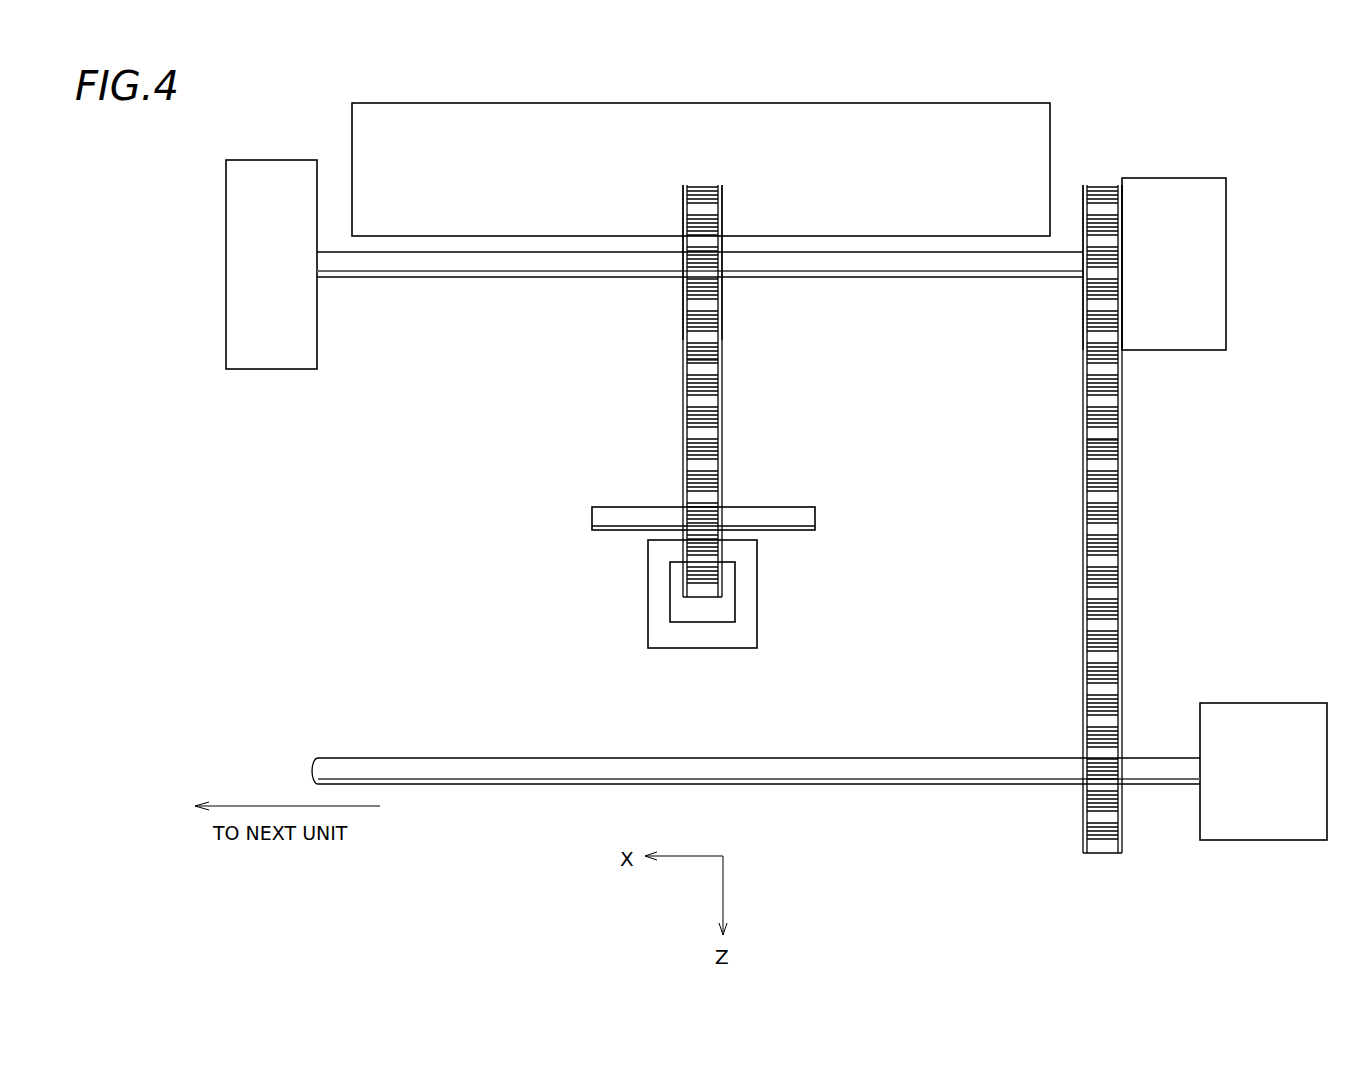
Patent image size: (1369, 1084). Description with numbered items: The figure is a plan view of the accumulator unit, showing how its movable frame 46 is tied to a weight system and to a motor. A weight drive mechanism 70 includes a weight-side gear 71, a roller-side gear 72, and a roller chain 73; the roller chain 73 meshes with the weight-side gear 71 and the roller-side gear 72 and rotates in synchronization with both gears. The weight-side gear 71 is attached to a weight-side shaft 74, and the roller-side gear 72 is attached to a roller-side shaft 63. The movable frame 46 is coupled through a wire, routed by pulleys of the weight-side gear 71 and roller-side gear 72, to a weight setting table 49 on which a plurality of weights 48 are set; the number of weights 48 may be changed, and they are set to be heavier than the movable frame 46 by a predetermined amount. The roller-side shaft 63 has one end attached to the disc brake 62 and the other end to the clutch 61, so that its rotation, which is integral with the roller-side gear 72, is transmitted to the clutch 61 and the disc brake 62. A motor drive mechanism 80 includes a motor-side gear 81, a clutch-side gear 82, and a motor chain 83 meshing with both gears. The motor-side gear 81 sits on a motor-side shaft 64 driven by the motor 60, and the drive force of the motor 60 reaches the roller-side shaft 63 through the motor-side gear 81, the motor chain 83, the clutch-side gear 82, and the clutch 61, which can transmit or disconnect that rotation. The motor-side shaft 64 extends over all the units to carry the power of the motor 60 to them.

The movable frame 46 is at (700, 122).
The weights 48 is at (703, 610).
The weight setting table 49 is at (757, 612).
The motor 60 is at (1272, 702).
The clutch 61 is at (1141, 177).
The disc brake 62 is at (245, 159).
The roller-side shaft 63 is at (906, 274).
The motor-side shaft 64 is at (906, 782).
The weight drive mechanism 70 is at (675, 391).
The weight-side gear 71 is at (683, 466).
The roller-side gear 72 is at (683, 330).
The roller chain 73 is at (735, 376).
The weight-side shaft 74 is at (778, 507).
The motor drive mechanism 80 is at (1115, 519).
The motor-side gear 81 is at (1083, 716).
The clutch-side gear 82 is at (1083, 304).
The motor chain 83 is at (1091, 448).